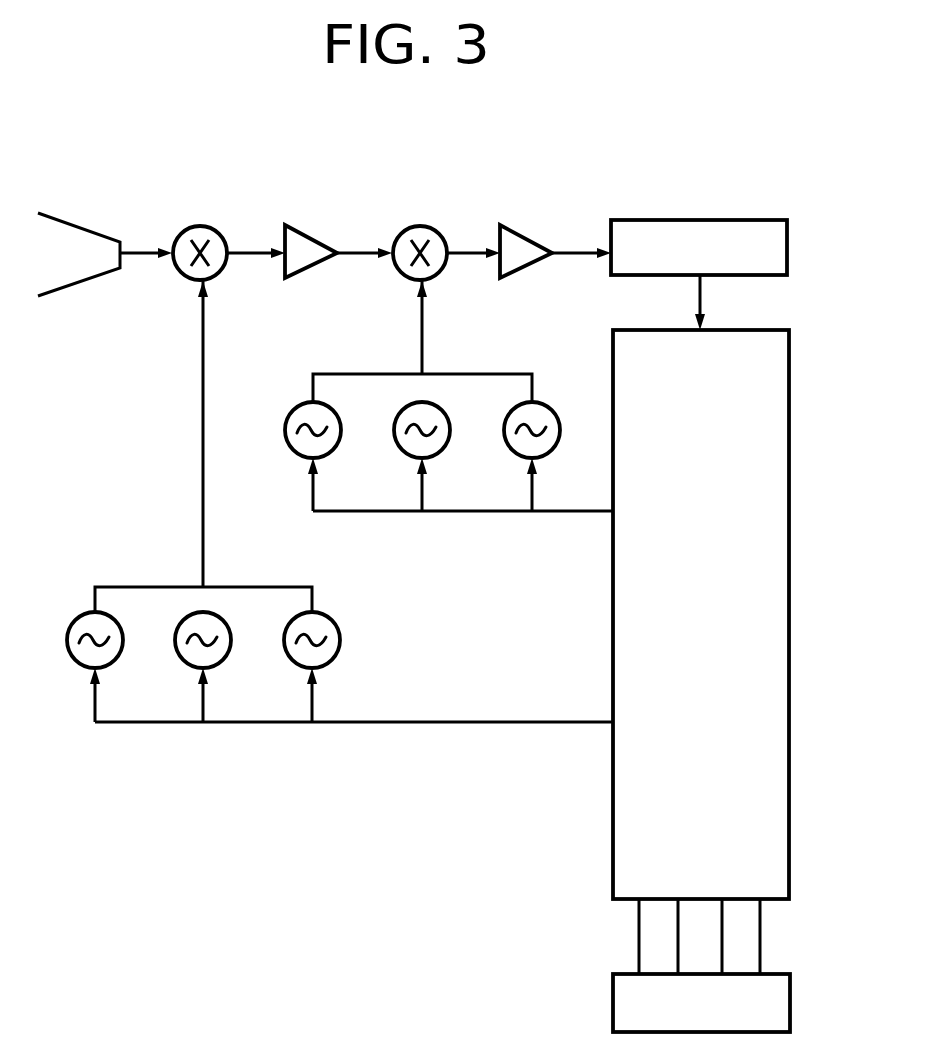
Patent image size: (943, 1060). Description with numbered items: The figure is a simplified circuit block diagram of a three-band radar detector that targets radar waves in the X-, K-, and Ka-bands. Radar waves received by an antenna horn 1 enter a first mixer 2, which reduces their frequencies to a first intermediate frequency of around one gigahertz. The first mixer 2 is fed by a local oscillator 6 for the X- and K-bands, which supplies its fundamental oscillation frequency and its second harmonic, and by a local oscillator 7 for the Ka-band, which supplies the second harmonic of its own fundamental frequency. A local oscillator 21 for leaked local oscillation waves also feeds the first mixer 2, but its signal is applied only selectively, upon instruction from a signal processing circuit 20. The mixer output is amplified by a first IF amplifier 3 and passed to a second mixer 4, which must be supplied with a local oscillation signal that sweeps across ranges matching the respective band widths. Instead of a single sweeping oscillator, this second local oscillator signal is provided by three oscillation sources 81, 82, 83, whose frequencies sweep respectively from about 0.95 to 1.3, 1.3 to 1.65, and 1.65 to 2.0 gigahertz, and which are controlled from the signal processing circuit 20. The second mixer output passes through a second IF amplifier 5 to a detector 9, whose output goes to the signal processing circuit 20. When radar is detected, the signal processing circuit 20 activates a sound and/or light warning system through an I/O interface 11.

The antenna horn 1 is at (79, 254).
The first mixer 2 is at (200, 226).
The first IF amplifier 3 is at (307, 238).
The second mixer 4 is at (420, 226).
The second IF amplifier 5 is at (526, 240).
The detector 9 is at (690, 220).
The signal processing circuit 20 is at (790, 583).
The I/O interface 11 is at (790, 997).
The first oscillation source 81 is at (336, 448).
The second oscillation source 82 is at (445, 448).
The third oscillation source 83 is at (555, 448).
The local oscillator for the X- and K-bands 6 is at (122, 645).
The local oscillator for the Ka-band 7 is at (230, 645).
The local oscillator for leaked local oscillation waves 21 is at (339, 645).